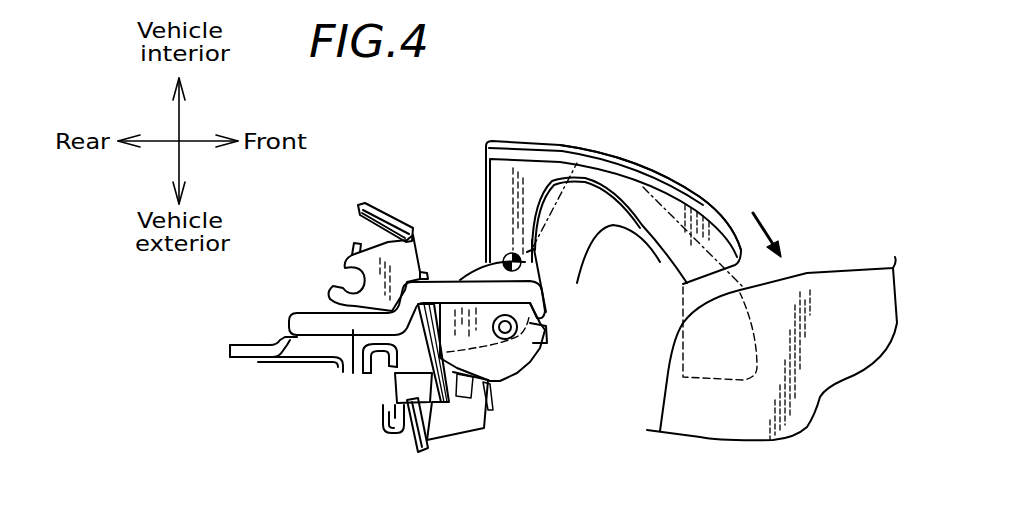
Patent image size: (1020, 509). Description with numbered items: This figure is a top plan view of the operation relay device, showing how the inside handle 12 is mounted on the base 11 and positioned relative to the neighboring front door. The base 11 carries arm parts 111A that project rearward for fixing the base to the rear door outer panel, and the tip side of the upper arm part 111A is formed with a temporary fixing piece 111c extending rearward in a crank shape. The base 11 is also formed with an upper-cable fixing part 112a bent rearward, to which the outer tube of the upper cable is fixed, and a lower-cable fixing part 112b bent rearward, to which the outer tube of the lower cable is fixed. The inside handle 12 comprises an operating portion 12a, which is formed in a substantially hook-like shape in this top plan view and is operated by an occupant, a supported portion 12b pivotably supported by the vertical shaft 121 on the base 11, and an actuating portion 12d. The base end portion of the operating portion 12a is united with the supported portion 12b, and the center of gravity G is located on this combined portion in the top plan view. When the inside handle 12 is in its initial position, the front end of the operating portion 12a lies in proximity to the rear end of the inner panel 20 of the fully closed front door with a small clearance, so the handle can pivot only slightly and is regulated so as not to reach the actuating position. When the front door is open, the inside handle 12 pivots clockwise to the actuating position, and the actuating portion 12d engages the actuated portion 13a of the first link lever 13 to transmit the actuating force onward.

The base 11 is at (505, 377).
The inside handle 12 is at (715, 197).
The operating portion 12a is at (642, 162).
The supported portion 12b is at (532, 285).
The actuating portion 12d is at (430, 425).
The shaft 121 is at (519, 326).
The first link lever 13 is at (393, 390).
The actuated portion 13a is at (440, 440).
The inner panel 20 is at (815, 273).
The arm part 111A is at (257, 347).
The temporary fixing piece 111c is at (242, 355).
The upper-cable fixing part 112a is at (347, 267).
The lower-cable fixing part 112b is at (365, 385).
The center of gravity G is at (509, 256).